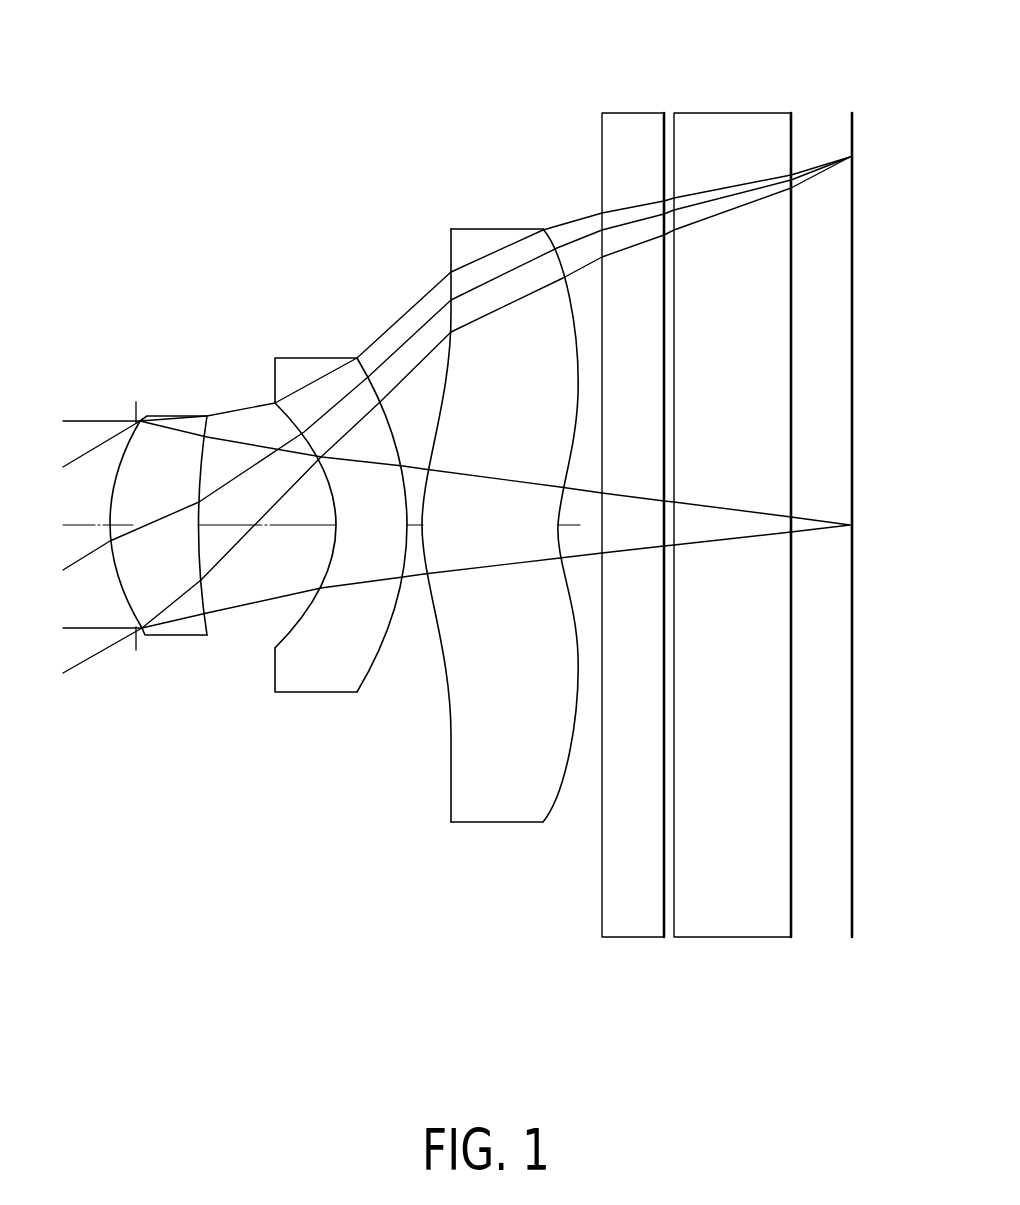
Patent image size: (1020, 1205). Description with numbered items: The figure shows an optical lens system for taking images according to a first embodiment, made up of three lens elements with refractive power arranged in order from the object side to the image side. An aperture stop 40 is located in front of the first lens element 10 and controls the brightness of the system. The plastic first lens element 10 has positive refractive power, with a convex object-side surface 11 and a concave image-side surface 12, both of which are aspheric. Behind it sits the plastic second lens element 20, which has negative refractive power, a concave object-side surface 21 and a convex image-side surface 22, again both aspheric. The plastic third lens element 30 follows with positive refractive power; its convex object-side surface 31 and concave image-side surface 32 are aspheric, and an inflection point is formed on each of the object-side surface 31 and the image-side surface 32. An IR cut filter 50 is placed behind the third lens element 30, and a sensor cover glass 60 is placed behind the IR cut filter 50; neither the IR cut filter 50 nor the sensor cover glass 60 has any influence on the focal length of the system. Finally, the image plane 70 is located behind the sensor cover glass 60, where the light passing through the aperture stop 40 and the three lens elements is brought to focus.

The first lens element 10 is at (133, 549).
The object-side surface of the first lens element 11 is at (125, 600).
The image-side surface of the first lens element 12 is at (198, 570).
The second lens element 20 is at (330, 527).
The object-side surface of the second lens element 21 is at (296, 634).
The image-side surface of the second lens element 22 is at (367, 667).
The third lens element 30 is at (491, 532).
The object-side surface of the third lens element 31 is at (452, 777).
The image-side surface of the third lens element 32 is at (553, 803).
The aperture stop 40 is at (130, 413).
The IR cut filter 50 is at (635, 155).
The sensor cover glass 60 is at (725, 155).
The image plane 70 is at (848, 133).